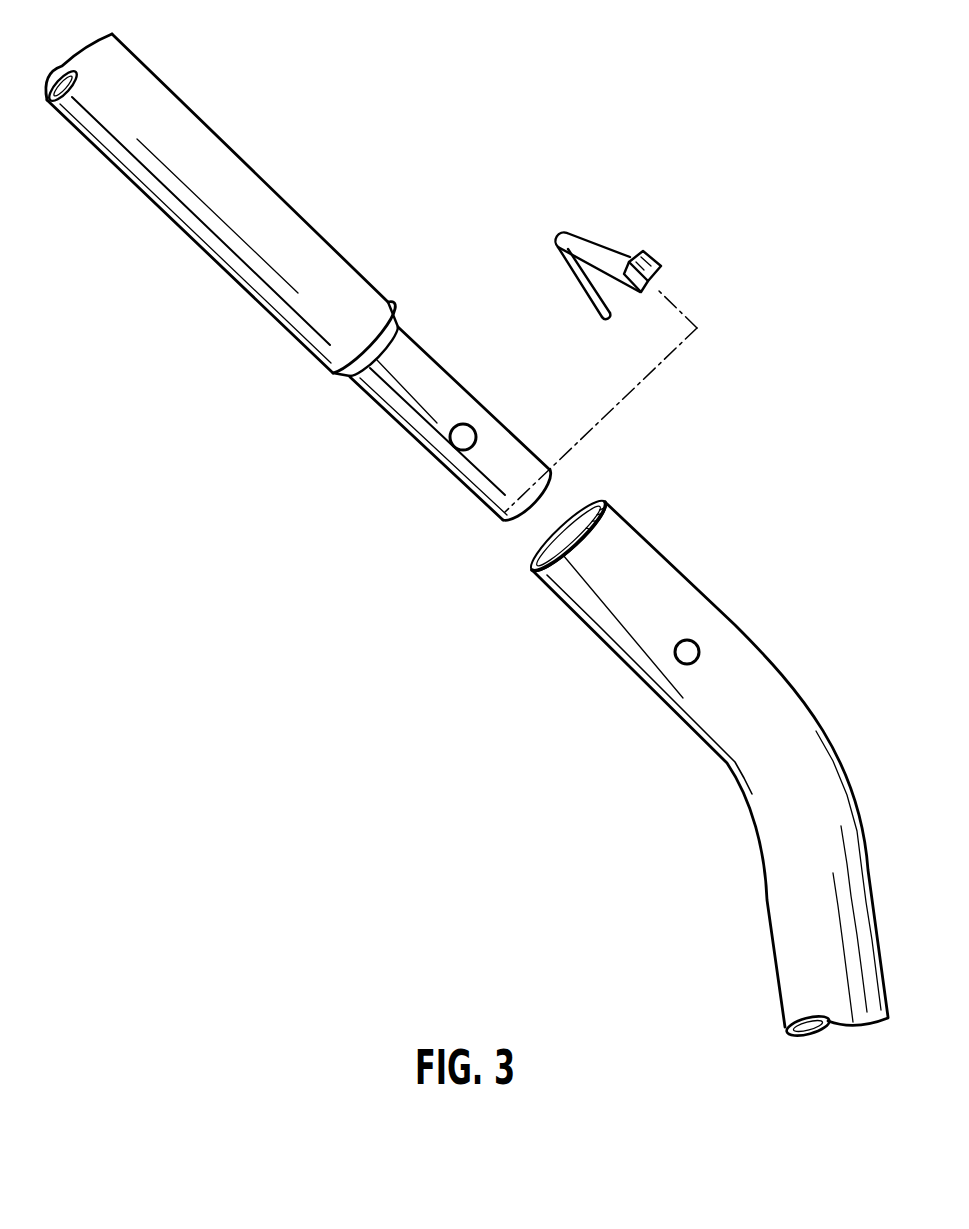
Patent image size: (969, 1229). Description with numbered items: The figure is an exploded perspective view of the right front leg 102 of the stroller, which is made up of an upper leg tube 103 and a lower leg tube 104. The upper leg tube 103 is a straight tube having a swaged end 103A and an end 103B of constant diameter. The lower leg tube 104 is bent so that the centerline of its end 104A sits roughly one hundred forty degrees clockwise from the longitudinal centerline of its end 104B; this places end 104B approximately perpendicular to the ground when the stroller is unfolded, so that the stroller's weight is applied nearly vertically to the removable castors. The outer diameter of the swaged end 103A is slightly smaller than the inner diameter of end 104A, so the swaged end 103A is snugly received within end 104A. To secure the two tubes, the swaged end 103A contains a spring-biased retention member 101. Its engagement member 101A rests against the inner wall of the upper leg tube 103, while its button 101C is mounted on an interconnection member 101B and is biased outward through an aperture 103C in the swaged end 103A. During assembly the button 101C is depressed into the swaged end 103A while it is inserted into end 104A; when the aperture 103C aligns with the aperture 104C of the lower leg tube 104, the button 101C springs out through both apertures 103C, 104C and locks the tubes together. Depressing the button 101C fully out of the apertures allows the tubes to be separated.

The spring-biased retention member 101 is at (602, 204).
The engagement member 101A is at (579, 283).
The interconnection member 101B is at (607, 252).
The button 101C is at (658, 264).
The right front leg 102 is at (282, 473).
The upper leg tube 103 is at (306, 221).
The swaged end 103A is at (452, 379).
The end of constant diameter 103B is at (125, 42).
The aperture 103C is at (451, 436).
The lower leg tube 104 is at (728, 768).
The end of lower leg tube 104A is at (633, 520).
The end of lower leg tube 104B is at (769, 921).
The aperture 104C is at (696, 643).